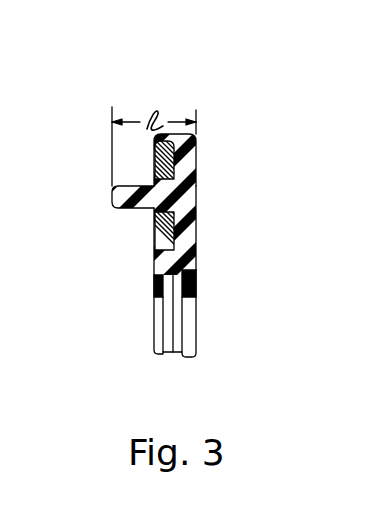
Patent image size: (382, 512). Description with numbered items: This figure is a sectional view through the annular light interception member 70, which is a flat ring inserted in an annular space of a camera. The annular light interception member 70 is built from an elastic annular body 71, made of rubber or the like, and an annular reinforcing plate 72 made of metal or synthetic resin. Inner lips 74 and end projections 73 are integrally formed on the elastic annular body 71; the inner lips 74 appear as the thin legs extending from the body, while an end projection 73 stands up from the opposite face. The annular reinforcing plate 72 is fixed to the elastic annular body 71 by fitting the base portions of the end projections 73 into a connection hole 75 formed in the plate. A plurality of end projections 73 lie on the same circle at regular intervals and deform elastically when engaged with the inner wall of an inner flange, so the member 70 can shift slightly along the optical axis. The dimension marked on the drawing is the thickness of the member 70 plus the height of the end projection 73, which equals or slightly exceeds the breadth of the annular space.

The annular light interception member 70 is at (184, 108).
The elastic annular body 71 is at (196, 247).
The annular reinforcing plate 72 is at (153, 247).
The end projections 73 is at (122, 207).
The inner lips 74 is at (153, 290).
The connection hole 75 is at (196, 200).